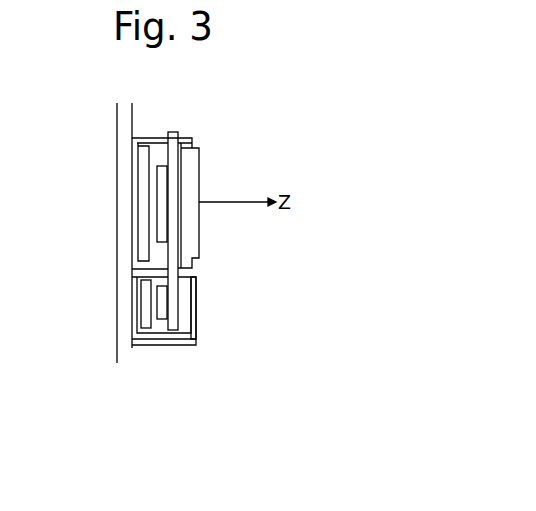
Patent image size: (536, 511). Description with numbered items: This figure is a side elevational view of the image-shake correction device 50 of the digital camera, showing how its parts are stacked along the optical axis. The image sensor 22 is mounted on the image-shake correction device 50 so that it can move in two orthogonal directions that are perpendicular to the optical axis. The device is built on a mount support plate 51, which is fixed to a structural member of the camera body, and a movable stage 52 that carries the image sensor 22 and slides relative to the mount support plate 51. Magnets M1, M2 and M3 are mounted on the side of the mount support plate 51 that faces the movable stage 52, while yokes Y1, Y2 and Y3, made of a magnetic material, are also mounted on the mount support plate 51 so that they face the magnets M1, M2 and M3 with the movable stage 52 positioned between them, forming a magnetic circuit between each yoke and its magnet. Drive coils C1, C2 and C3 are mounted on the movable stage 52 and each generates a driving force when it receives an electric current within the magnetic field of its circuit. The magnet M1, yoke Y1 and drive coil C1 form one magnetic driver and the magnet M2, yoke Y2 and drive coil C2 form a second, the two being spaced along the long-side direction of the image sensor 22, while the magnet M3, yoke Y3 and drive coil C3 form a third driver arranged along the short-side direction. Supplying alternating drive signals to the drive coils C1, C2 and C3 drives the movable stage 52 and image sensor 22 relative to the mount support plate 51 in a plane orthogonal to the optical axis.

The image sensor 22 is at (190, 159).
The image-shake correction device 50 is at (305, 445).
The mount support plate 51 is at (122, 361).
The movable stage 52 is at (177, 322).
The magnet M3 is at (140, 149).
The drive coil C3 is at (159, 166).
The yoke Y3 is at (185, 137).
The magnet M1 is at (147, 326).
The magnet M2 is at (134, 364).
The drive coil C1 is at (162, 320).
The drive coil C2 is at (183, 367).
The yoke Y1 is at (193, 346).
The yoke Y2 is at (223, 362).